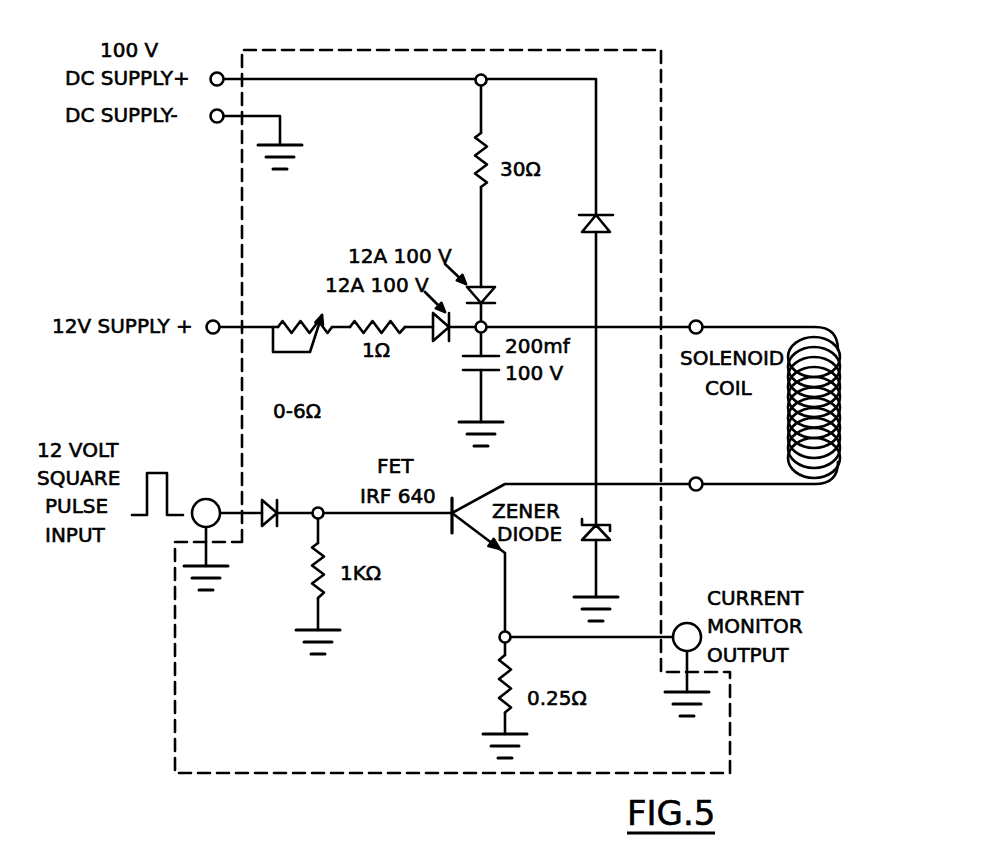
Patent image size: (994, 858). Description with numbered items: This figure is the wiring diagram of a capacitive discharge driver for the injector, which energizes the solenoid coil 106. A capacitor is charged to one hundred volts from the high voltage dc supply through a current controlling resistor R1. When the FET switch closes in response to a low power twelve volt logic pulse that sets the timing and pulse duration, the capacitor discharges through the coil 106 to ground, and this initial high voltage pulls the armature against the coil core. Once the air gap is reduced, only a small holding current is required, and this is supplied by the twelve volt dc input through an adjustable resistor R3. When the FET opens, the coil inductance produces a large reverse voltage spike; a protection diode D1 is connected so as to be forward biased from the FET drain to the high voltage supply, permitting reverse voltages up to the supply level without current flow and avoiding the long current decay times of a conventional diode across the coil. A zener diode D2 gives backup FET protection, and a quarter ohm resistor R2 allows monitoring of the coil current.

The solenoid coil 106 is at (841, 368).
The current controlling resistor R1 is at (499, 156).
The quarter ohm resistor R2 is at (524, 683).
The adjustable resistor R3 is at (302, 353).
The protection diode D1 is at (611, 229).
The zener diode D2 is at (612, 534).